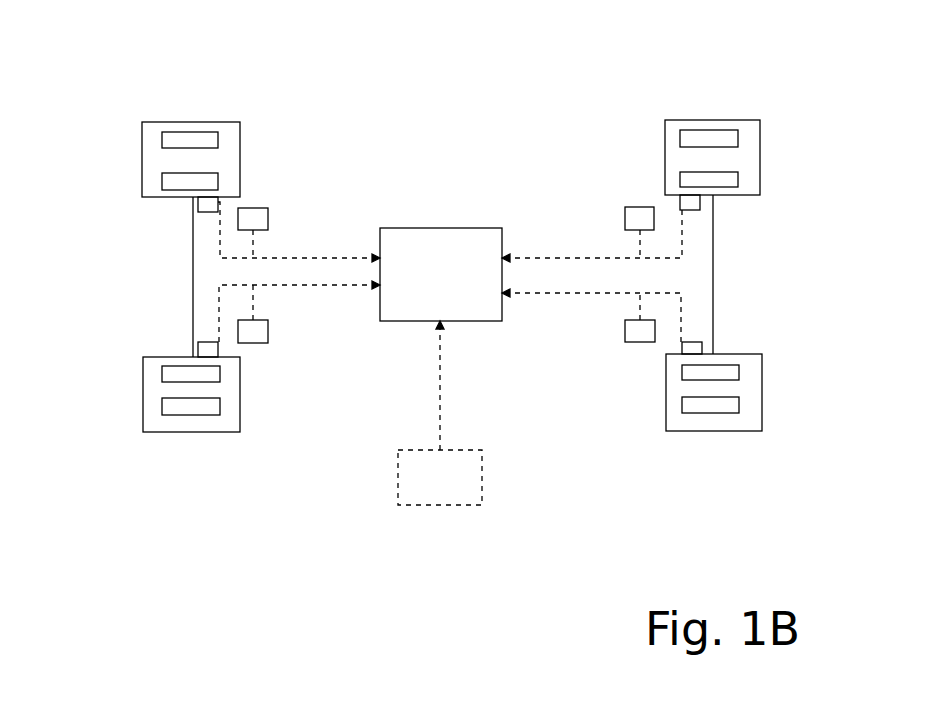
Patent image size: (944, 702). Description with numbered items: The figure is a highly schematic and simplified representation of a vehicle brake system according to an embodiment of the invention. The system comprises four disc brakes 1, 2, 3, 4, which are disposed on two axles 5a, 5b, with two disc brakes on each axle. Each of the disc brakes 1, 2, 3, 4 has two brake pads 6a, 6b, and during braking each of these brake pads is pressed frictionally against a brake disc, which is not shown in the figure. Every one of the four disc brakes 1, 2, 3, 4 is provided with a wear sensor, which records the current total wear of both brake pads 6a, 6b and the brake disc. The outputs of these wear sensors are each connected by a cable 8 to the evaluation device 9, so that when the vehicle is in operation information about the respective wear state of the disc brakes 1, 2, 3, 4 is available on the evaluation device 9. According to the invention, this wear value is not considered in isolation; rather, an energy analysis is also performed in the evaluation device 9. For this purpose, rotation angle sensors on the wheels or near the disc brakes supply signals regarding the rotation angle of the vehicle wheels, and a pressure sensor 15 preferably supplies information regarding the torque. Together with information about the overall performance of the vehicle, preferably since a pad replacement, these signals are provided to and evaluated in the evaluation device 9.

The disc brake 1 is at (181, 122).
The disc brake 2 is at (240, 432).
The disc brake 3 is at (760, 120).
The disc brake 4 is at (762, 431).
The axle 5a is at (192, 275).
The axle 5b is at (713, 272).
The brake pad 6a is at (141, 145).
The brake pad 6b is at (142, 195).
The cable 8 is at (563, 256).
The evaluation device 9 is at (483, 228).
The pressure sensor 15 is at (482, 452).